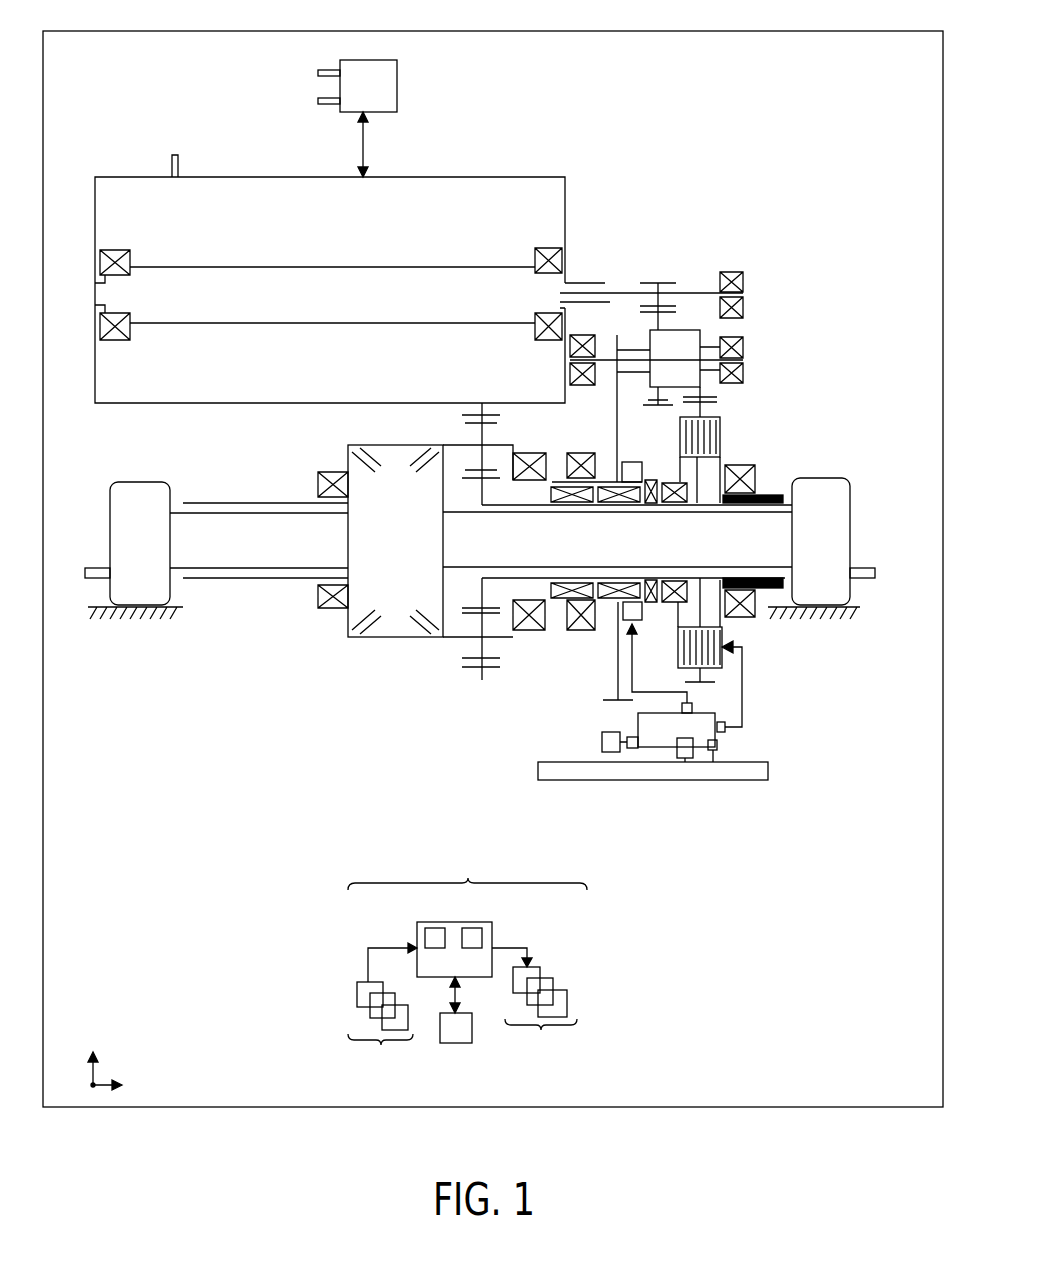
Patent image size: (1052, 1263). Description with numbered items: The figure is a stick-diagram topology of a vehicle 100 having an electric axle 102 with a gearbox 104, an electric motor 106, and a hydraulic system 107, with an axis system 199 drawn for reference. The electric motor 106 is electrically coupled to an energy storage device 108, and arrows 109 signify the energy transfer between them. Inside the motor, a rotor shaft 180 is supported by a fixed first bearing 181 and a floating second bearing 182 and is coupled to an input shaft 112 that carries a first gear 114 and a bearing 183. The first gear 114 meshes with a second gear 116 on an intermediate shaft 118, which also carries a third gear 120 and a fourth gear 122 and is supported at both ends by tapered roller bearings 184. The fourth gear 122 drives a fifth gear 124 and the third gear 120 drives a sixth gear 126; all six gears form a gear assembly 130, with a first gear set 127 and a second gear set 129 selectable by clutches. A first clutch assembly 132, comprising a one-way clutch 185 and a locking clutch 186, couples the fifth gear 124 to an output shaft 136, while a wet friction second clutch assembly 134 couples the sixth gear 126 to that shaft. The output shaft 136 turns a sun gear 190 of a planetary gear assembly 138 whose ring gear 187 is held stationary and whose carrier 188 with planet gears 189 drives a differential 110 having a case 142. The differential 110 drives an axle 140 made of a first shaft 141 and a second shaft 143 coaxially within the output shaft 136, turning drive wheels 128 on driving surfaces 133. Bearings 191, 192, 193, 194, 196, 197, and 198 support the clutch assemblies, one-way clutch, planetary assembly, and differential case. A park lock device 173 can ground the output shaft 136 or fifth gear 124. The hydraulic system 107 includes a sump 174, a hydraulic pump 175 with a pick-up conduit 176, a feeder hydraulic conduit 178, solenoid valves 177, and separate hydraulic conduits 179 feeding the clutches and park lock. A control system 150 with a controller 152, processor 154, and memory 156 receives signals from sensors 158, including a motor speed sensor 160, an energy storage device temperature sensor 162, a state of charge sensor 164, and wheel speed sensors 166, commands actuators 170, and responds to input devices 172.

The vehicle 100 is at (46, 31).
The electric axle 102 is at (149, 77).
The gearbox 104 is at (804, 200).
The electric motor 106 is at (136, 177).
The hydraulic system 107 is at (826, 690).
The energy storage device 108 is at (398, 84).
The arrows 109 is at (367, 147).
The differential 110 is at (343, 456).
The input shaft 112 is at (620, 292).
The first gear 114 is at (668, 283).
The second gear 116 is at (662, 314).
The intermediate shaft 118 is at (653, 372).
The third gear 120 is at (700, 338).
The fourth gear 122 is at (588, 345).
The fifth gear 124 is at (612, 695).
The sixth gear 126 is at (717, 402).
The first gear set 127 is at (600, 706).
The drive wheels 128 is at (110, 517).
The second gear set 129 is at (703, 688).
The gear assembly 130 is at (811, 312).
The first clutch assembly 132 is at (645, 452).
The driving surfaces 133 is at (96, 607).
The second clutch assembly 134 is at (722, 437).
The output shaft 136 is at (547, 583).
The planetary gear assembly 138 is at (428, 432).
The axle 140 is at (257, 503).
The first shaft 141 is at (183, 503).
The differential case 142 is at (395, 637).
The second shaft 143 is at (615, 629).
The control system 150 is at (467, 871).
The controller 152 is at (426, 922).
The processor 154 is at (422, 938).
The memory 156 is at (484, 938).
The sensors 158 is at (382, 1006).
The motor speed sensor 160 is at (178, 162).
The energy storage device temperature sensor 162 is at (319, 100).
The energy storage device state of charge sensor 164 is at (319, 72).
The wheel speed sensors 166 is at (104, 568).
The actuators 170 is at (534, 1000).
The input devices 172 is at (455, 1045).
The park lock device 173 is at (600, 743).
The sump 174 is at (724, 781).
The hydraulic pump 175 is at (680, 768).
The pick-up conduit 176 is at (686, 762).
The solenoid valves 177 is at (684, 721).
The hydraulic conduit 178 is at (638, 719).
The hydraulic conduits 179 is at (752, 700).
The rotor shaft 180 is at (258, 267).
The first bearing 181 is at (115, 250).
The second bearing 182 is at (545, 248).
The bearing 183 is at (737, 271).
The bearings 184 is at (745, 375).
The one-way clutch 185 is at (570, 582).
The locking clutch 186 is at (643, 622).
The ring gear 187 is at (500, 416).
The carrier 188 is at (468, 446).
The planet gears 189 is at (490, 437).
The sun gear 190 is at (487, 493).
The bearing 191 is at (740, 618).
The bearing 192 is at (755, 480).
The bearing 193 is at (672, 581).
The bearing 194 is at (650, 580).
The bearing 196 is at (580, 632).
The bearing 197 is at (528, 632).
The bearing 198 is at (333, 610).
The axis system 199 is at (102, 1062).